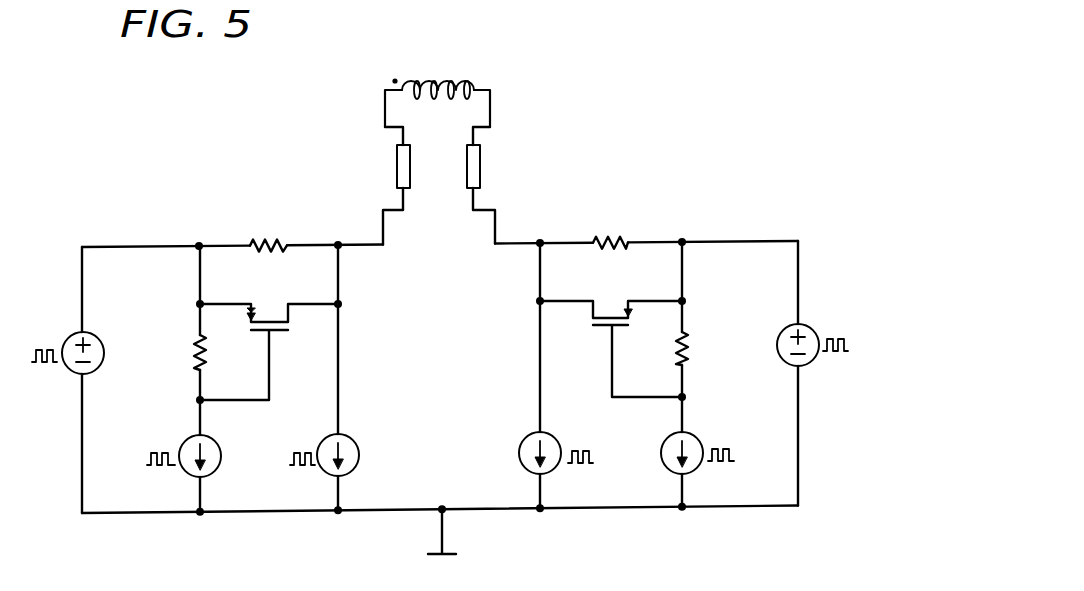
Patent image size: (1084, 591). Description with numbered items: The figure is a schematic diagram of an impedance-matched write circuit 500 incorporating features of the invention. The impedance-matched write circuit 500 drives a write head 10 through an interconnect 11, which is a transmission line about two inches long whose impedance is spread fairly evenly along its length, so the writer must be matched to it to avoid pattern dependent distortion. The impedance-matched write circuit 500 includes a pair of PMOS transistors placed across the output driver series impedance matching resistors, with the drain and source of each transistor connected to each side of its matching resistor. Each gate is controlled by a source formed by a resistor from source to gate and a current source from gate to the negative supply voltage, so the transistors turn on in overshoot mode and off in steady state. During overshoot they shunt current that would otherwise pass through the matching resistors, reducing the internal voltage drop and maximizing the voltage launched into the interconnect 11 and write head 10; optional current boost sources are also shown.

The impedance-matched write circuit 500 is at (653, 98).
The write head 10 is at (466, 62).
The interconnect 11 is at (260, 164).